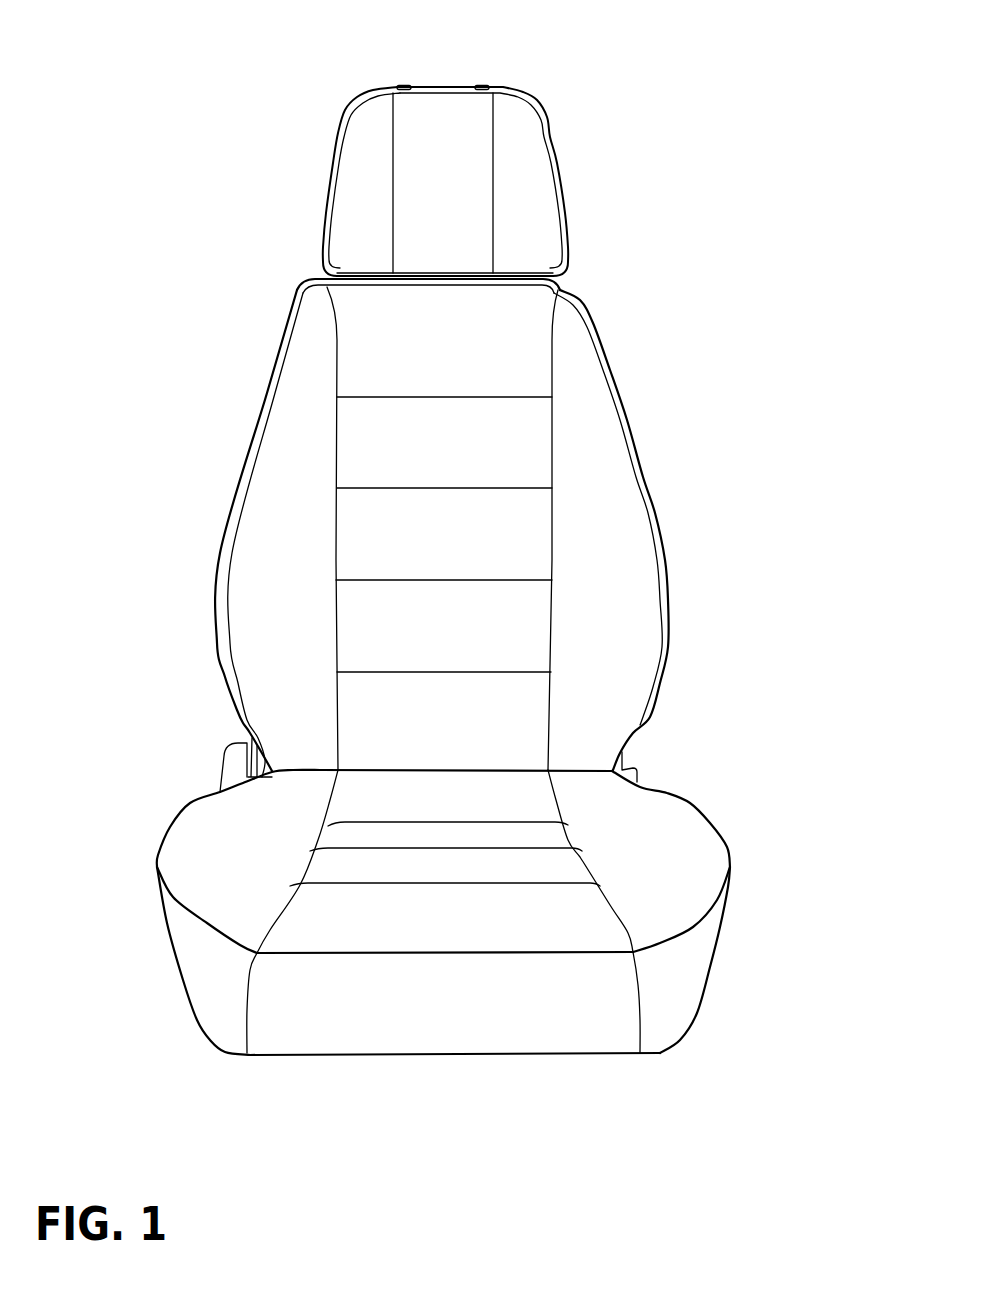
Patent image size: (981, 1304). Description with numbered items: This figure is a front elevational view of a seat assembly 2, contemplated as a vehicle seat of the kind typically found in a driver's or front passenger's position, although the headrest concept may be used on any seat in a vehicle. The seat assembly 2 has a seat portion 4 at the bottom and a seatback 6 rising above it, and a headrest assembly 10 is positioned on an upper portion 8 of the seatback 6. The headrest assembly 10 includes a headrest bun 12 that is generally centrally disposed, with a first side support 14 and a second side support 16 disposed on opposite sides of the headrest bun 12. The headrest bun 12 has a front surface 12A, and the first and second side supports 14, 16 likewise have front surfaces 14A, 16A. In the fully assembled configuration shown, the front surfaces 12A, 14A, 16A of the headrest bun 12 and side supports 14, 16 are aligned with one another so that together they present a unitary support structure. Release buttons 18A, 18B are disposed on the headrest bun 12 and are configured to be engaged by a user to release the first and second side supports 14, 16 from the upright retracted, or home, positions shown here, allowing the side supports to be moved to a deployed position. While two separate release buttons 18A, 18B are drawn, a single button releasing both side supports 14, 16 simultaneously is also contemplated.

The seat assembly 2 is at (672, 348).
The seat portion 4 is at (480, 856).
The seatback 6 is at (520, 517).
The upper portion of the seatback 8 is at (413, 333).
The headrest assembly 10 is at (592, 120).
The headrest bun 12 is at (442, 128).
The front surface of the headrest bun 12A is at (462, 222).
The first side support 14 is at (363, 158).
The front surface of the first side support 14A is at (386, 242).
The second side support 16 is at (527, 173).
The front surface of the second side support 16A is at (540, 243).
The release button 18A is at (403, 86).
The release button 18B is at (481, 85).